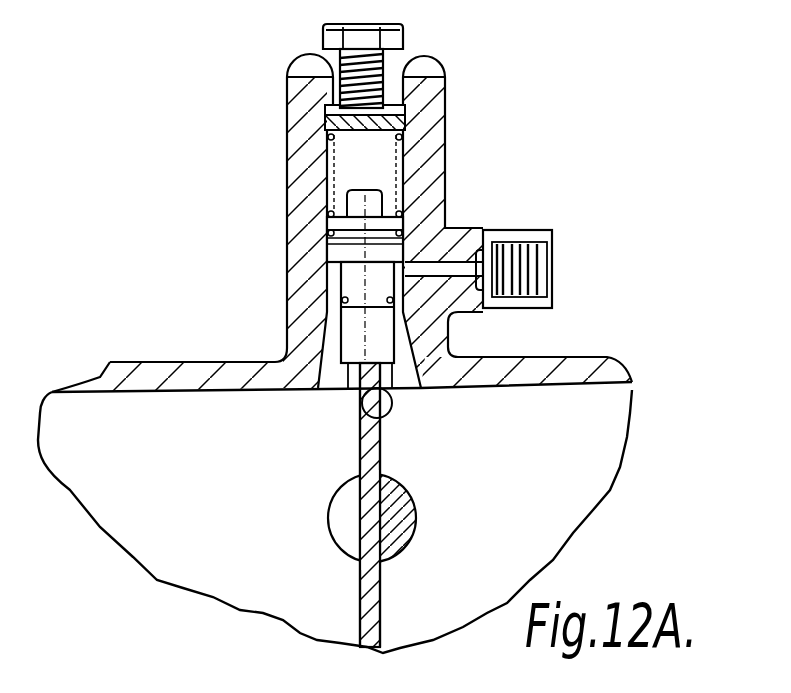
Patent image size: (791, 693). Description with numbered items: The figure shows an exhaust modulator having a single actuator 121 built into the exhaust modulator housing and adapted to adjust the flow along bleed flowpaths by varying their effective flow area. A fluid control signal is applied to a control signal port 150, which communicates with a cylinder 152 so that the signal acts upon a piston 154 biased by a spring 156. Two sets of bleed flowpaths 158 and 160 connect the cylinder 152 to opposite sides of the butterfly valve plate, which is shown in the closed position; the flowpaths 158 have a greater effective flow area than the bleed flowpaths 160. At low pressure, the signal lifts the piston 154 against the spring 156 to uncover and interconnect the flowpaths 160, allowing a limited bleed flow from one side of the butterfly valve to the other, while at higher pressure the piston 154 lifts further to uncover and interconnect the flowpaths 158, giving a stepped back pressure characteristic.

The actuator 121 is at (262, 282).
The control signal port 150 is at (553, 250).
The cylinder 152 is at (405, 235).
The piston 154 is at (410, 250).
The spring 156 is at (410, 170).
The bleed flowpaths 158 is at (425, 325).
The bleed flowpaths 160 is at (358, 405).